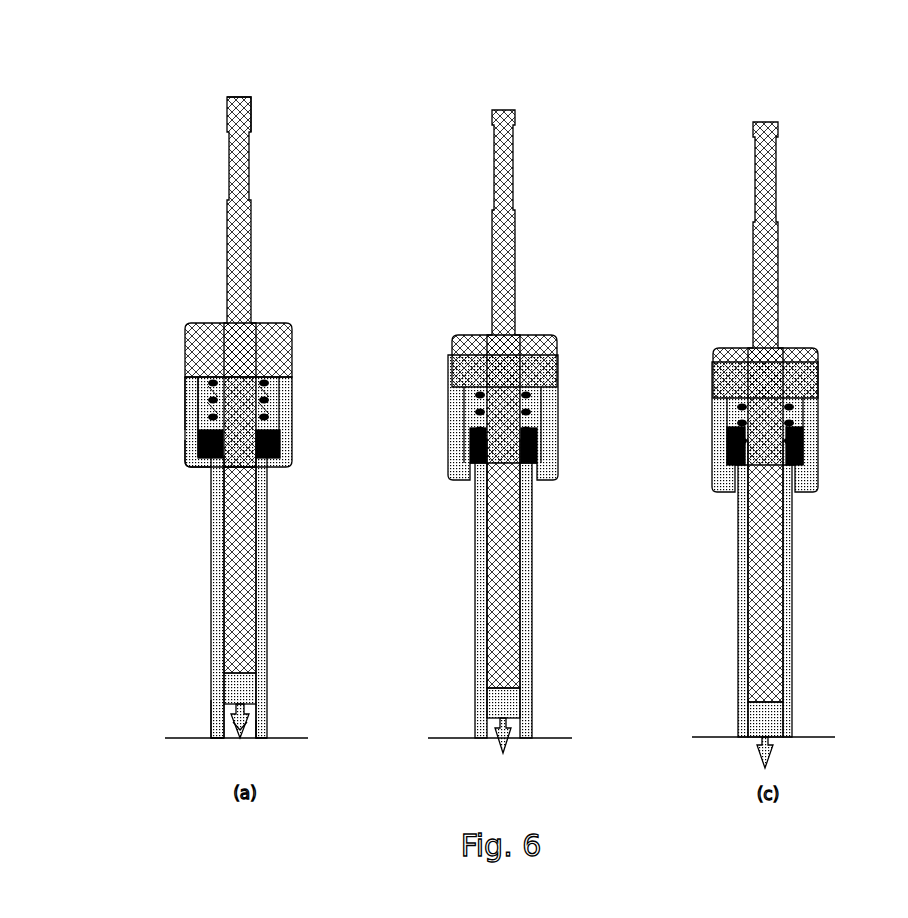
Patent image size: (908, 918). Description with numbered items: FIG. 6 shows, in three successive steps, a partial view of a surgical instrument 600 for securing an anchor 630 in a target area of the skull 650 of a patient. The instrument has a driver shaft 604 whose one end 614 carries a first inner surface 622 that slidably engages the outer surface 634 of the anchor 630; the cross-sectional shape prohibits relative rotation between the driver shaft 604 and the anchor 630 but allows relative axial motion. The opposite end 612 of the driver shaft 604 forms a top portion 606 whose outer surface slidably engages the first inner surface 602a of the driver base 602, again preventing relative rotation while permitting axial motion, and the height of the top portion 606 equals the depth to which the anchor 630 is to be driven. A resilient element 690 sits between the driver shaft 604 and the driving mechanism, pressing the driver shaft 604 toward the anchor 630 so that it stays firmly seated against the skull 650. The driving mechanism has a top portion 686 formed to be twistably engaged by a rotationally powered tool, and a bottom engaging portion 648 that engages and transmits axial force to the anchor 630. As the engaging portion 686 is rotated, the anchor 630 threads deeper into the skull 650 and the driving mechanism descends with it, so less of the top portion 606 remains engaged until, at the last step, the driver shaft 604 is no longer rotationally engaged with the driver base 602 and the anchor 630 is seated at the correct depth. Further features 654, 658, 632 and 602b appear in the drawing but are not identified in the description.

The surgical instrument 600 is at (544, 38).
The top portion of the driving mechanism 686 is at (268, 121).
The plunger rod 654 is at (252, 178).
The opposite end of the driver shaft 612 is at (188, 328).
The driver base 602 is at (285, 435).
The upper housing portion 602b is at (190, 418).
The first inner surface of the driver base 602a is at (275, 470).
The top portion of the driver shaft 606 is at (198, 468).
The resilient element 690 is at (268, 386).
The plunger shaft 658 is at (244, 537).
The driver shaft 604 is at (268, 612).
The stopper 632 is at (266, 658).
The outer surface of the anchor 634 is at (264, 695).
The first inner surface of the driver shaft 622 is at (266, 736).
The skull 650 is at (282, 739).
The bottom engaging portion of the driving mechanism 648 is at (212, 698).
The anchor 630 is at (229, 722).
The one end of the driver shaft 614 is at (217, 744).